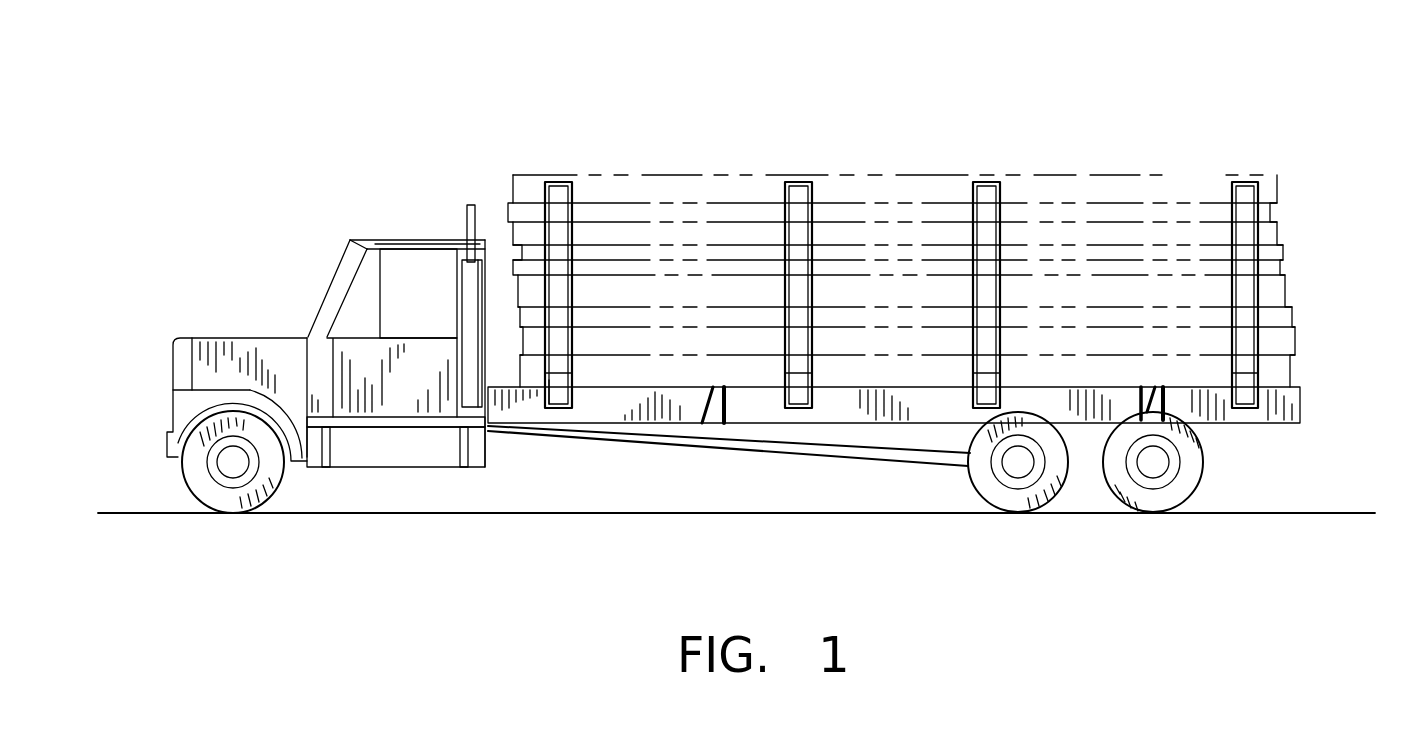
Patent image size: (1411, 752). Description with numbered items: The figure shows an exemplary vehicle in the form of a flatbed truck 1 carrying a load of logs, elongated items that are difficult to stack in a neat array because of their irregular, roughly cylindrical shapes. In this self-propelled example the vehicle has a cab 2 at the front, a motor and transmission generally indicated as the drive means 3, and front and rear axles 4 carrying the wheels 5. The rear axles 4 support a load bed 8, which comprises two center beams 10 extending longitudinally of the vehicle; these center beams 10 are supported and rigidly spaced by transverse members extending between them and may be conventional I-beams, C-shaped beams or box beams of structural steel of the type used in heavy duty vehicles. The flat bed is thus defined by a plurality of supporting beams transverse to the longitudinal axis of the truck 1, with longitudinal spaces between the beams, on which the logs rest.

The flatbed truck 1 is at (477, 116).
The cab 2 is at (385, 243).
The drive means 3 is at (710, 438).
The front and rear axles 4 is at (230, 465).
The wheels 5 is at (1017, 517).
The load bed 8 is at (1330, 373).
The center beams 10 is at (1300, 408).